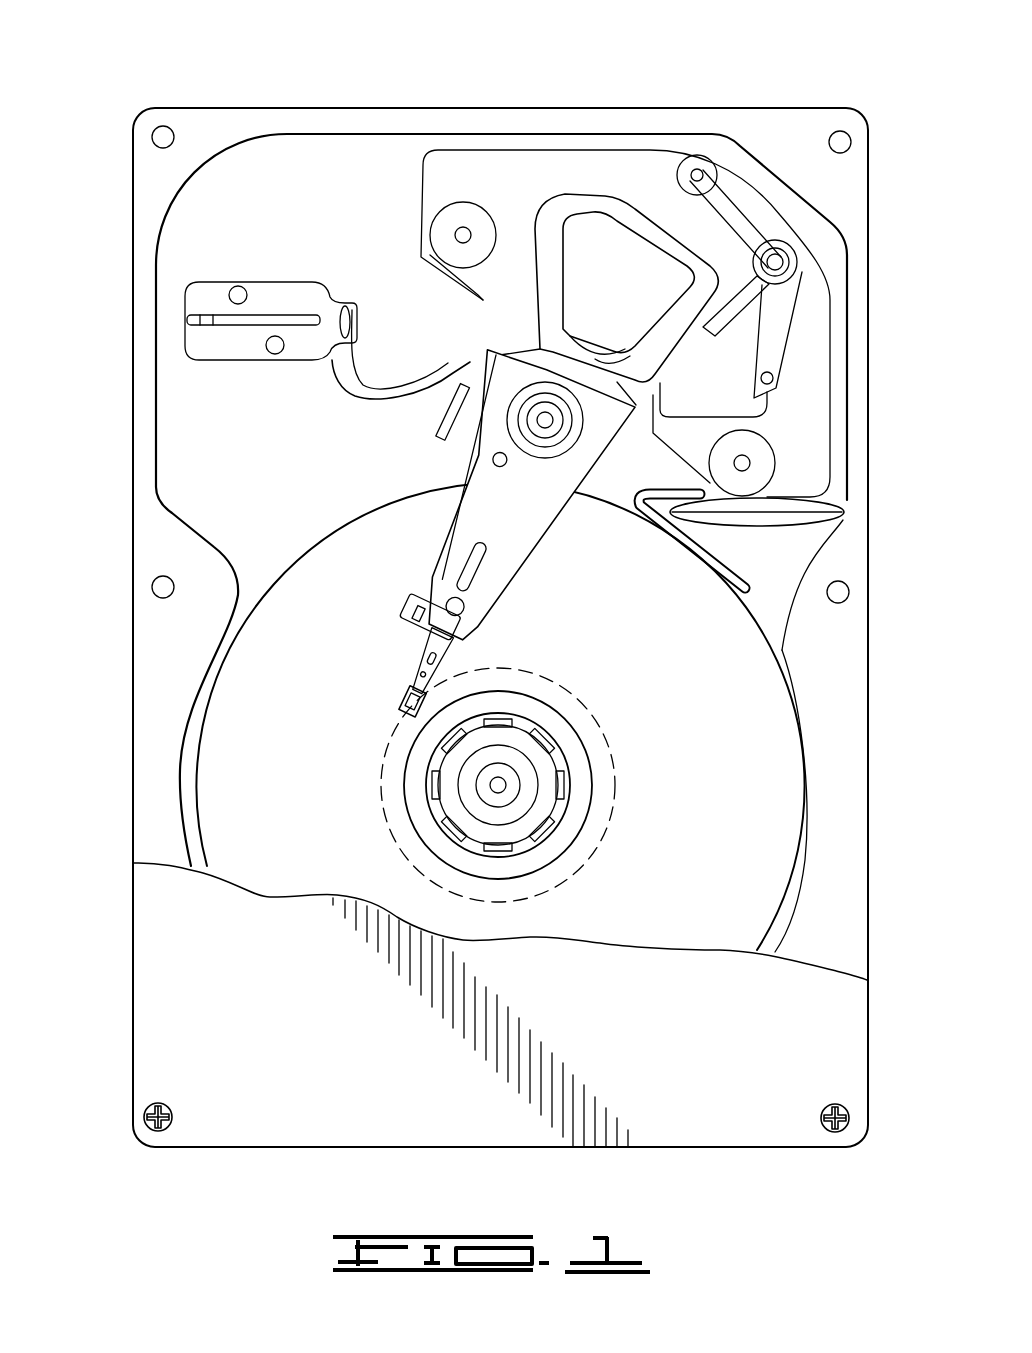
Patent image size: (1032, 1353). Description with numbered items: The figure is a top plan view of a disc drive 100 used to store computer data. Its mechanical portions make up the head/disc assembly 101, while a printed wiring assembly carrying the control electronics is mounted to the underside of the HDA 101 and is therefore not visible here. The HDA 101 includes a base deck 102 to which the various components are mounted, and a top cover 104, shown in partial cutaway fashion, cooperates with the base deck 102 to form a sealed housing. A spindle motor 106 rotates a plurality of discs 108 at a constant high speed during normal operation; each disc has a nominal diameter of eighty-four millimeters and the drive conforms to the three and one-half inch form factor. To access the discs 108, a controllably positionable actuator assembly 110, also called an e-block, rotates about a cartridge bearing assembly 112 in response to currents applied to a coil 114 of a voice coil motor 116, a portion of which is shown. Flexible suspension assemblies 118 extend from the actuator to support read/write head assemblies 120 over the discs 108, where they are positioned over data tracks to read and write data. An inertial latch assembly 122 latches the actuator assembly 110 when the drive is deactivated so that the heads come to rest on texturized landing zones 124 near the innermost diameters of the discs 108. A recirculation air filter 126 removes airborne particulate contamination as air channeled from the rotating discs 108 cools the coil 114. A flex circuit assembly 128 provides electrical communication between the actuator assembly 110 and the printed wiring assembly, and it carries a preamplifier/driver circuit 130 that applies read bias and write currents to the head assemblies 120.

The disc drive 100 is at (238, 60).
The head/disc assembly 101 is at (195, 126).
The base deck 102 is at (190, 440).
The top cover 104 is at (185, 942).
The spindle motor 106 is at (548, 765).
The discs 108 is at (785, 795).
The actuator assembly 110 is at (512, 505).
The cartridge bearing assembly 112 is at (549, 425).
The coil 114 is at (572, 190).
The voice coil motor 116 is at (634, 182).
The flexible suspension assemblies 118 is at (393, 647).
The read/write head assemblies 120 is at (400, 704).
The inertial latch assembly 122 is at (785, 315).
The texturized landing zones 124 is at (580, 698).
The recirculation air filter 126 is at (775, 530).
The flex circuit assembly 128 is at (381, 385).
The preamplifier/driver circuit 130 is at (455, 415).